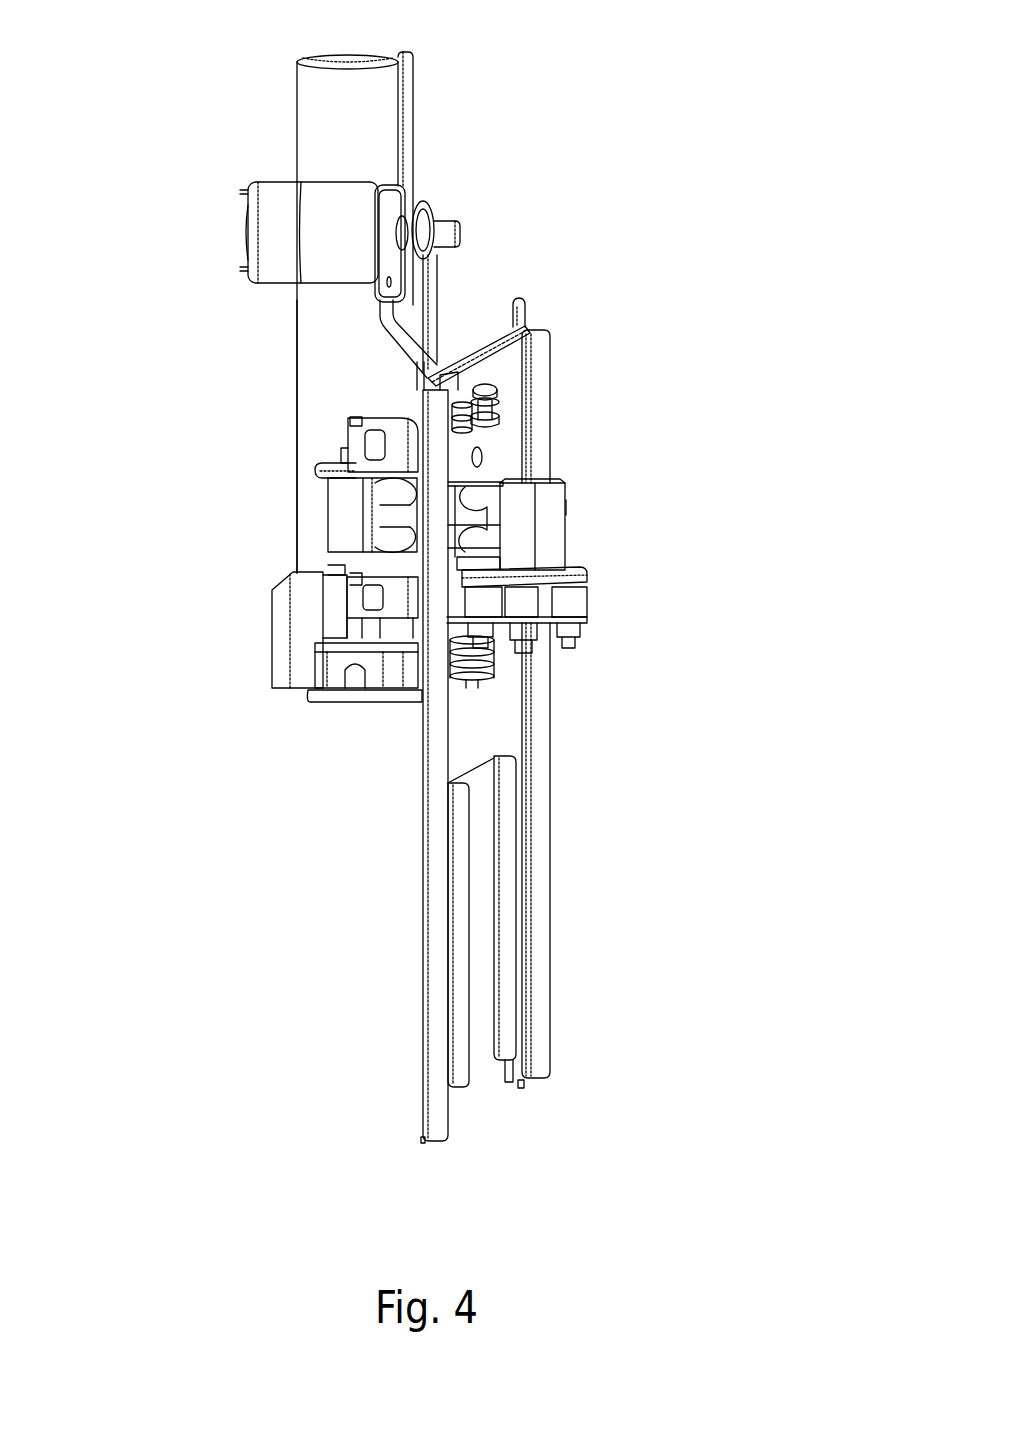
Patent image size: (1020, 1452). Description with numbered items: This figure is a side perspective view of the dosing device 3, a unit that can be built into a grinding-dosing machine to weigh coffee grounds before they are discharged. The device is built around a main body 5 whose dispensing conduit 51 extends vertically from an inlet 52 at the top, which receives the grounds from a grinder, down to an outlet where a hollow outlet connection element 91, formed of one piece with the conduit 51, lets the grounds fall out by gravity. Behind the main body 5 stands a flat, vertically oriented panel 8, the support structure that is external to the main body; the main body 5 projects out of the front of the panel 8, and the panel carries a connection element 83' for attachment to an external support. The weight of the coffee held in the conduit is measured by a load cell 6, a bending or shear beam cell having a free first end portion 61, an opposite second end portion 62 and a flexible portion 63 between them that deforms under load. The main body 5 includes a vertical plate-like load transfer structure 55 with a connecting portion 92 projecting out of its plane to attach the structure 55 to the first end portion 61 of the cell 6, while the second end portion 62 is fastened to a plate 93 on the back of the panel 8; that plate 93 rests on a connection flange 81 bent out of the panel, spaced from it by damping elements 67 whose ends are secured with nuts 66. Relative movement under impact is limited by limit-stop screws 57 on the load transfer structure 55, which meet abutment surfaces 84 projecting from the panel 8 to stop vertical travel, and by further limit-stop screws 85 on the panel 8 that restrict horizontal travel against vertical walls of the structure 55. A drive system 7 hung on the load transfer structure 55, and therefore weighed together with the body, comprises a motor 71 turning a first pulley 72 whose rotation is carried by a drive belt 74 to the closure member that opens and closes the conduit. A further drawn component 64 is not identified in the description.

The dosing device 3 is at (636, 224).
The main body 5 is at (258, 404).
The load cell 6 is at (566, 507).
The drive system 7 is at (205, 225).
The panel 8 is at (533, 933).
The dispensing conduit 51 is at (300, 352).
The inlet 52 is at (365, 58).
The load transfer structure 55 is at (440, 340).
The limit-stop screws 57 is at (500, 392).
The first end portion 61 is at (340, 530).
The second end portion 62 is at (550, 530).
The flexible portion 63 is at (503, 480).
The clamp 64 is at (340, 503).
The nuts 66 is at (575, 640).
The damping elements 67 is at (575, 600).
The motor 71 is at (270, 213).
The first pulley 72 is at (440, 213).
The drive belt 74 is at (432, 270).
The connection flange 81 is at (552, 625).
The connection element 83' is at (497, 1116).
The abutment surfaces 84 is at (500, 418).
The limit-stop screws 85 is at (490, 458).
The outlet connection element 91 is at (292, 640).
The connecting portion 92 is at (320, 472).
The plate 93 is at (590, 578).